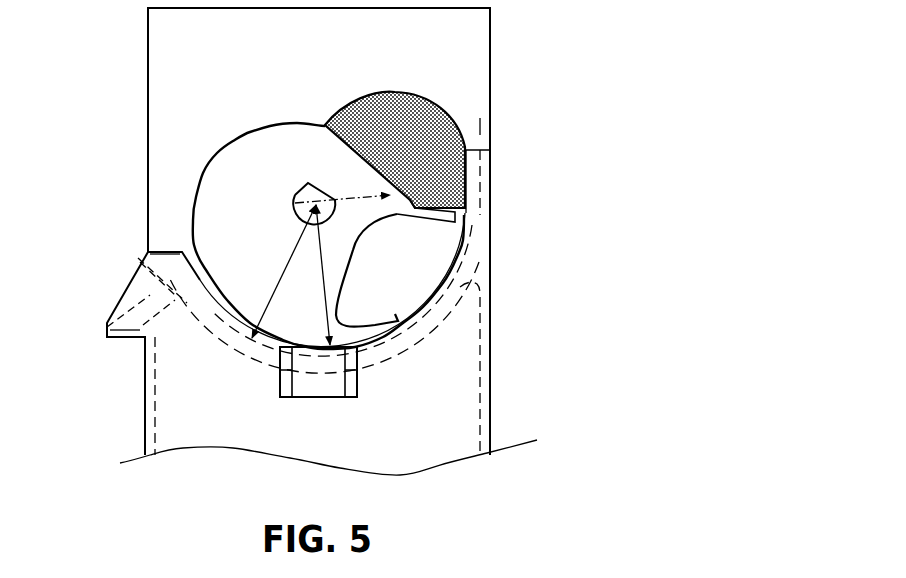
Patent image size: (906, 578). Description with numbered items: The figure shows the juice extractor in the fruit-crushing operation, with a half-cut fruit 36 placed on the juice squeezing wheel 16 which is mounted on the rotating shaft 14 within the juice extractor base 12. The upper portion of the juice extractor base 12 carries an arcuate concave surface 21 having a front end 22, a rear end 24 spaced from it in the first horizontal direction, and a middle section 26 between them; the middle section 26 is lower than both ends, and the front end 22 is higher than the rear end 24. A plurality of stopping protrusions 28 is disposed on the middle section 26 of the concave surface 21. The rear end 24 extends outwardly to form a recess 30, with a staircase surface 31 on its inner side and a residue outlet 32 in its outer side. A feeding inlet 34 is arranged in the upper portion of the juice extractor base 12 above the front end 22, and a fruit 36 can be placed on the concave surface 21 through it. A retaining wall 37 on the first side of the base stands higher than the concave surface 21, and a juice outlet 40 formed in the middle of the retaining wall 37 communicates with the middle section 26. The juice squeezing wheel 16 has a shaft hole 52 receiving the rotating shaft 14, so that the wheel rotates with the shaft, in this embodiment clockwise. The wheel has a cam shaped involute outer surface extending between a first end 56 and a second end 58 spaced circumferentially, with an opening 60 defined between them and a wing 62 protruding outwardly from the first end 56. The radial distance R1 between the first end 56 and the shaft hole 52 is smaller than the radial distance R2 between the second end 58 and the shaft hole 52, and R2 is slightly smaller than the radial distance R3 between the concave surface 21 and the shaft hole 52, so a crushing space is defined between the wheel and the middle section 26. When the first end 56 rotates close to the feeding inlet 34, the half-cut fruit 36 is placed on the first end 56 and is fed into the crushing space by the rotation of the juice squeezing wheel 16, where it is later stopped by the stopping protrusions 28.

The juice extractor base 12 is at (490, 288).
The rotating shaft 14 is at (295, 200).
The juice squeezing wheel 16 is at (230, 195).
The arcuate concave surface 21 is at (225, 315).
The front end 22 is at (487, 150).
The rear end 24 is at (147, 392).
The middle section 26 is at (265, 335).
The stopping protrusions 28 is at (284, 396).
The recess 30 is at (150, 318).
The staircase surface 31 is at (135, 252).
The residue outlet 32 is at (157, 287).
The feeding inlet 34 is at (480, 127).
The fruit 36 is at (430, 110).
The retaining wall 37 is at (467, 233).
The juice outlet 40 is at (323, 392).
The shaft hole 52 is at (308, 183).
The first end 56 is at (395, 210).
The second end 58 is at (380, 345).
The opening 60 is at (392, 285).
The wing 62 is at (460, 215).
The radial distance between first end and shaft hole R1 is at (353, 197).
The radial distance between second end and shaft hole R2 is at (338, 302).
The radial distance between concave surface and shaft hole R3 is at (288, 258).